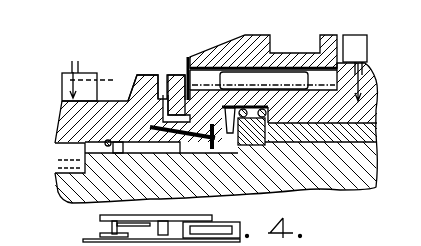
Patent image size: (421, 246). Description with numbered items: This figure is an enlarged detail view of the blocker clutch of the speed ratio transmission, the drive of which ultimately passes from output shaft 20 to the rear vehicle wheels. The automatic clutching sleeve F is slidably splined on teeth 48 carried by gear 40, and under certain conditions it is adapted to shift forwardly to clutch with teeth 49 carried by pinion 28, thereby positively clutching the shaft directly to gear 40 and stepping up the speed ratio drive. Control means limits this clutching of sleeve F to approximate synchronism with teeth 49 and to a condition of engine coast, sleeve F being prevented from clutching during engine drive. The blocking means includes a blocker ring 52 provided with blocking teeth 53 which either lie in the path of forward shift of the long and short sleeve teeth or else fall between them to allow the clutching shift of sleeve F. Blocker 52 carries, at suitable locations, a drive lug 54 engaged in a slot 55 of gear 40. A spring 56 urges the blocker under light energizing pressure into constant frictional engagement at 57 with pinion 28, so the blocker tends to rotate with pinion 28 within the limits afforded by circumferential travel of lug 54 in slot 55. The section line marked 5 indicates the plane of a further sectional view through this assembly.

The output shaft 20 is at (348, 173).
The pinion 28 is at (88, 72).
The gear 40 is at (355, 46).
The teeth 48 is at (287, 80).
The teeth 49 is at (147, 76).
The blocker ring 52 is at (178, 126).
The blocking teeth 53 is at (172, 77).
The drive lug 54 is at (201, 95).
The slot 55 is at (212, 92).
The spring 56 is at (265, 145).
The frictional engagement 57 is at (208, 138).
The automatic clutching sleeve F is at (255, 50).
The section line 5- 5 is at (221, 84).